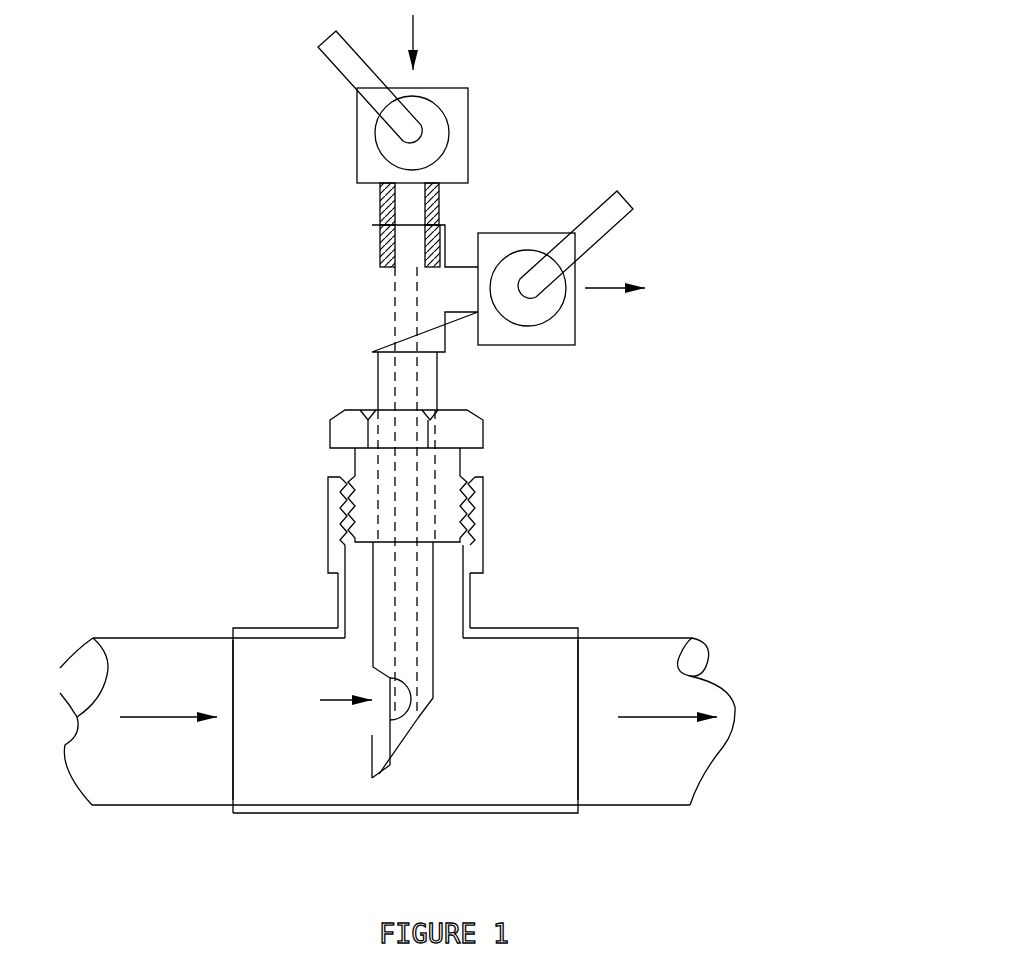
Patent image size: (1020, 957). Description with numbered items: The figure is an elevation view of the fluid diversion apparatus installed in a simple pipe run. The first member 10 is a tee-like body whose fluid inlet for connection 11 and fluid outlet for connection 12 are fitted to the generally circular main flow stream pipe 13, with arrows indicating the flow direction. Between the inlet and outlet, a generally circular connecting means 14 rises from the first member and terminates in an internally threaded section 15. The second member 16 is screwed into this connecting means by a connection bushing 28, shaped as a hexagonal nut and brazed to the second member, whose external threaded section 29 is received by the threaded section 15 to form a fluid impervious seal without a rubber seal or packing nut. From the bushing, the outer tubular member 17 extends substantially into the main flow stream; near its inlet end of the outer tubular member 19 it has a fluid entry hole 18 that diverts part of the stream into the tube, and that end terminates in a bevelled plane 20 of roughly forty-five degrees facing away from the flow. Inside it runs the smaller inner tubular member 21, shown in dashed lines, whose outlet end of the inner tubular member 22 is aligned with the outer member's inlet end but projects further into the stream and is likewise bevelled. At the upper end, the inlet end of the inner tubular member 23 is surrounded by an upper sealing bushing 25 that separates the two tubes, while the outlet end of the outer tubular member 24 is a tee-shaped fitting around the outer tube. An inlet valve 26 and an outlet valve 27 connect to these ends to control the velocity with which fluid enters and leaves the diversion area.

The first member 10 is at (398, 823).
The fluid inlet for connection 11 is at (233, 757).
The fluid outlet for connection 12 is at (577, 747).
The main flow stream pipe 13 is at (722, 757).
The connecting means 14 is at (337, 593).
The threaded section 15 is at (487, 514).
The second member 16 is at (605, 95).
The outer tubular member 17 is at (437, 628).
The fluid entry hole 18 is at (370, 733).
The inlet end of the outer tubular member 19 is at (413, 748).
The bevelled plane 20 is at (372, 778).
The inner tubular member 21 is at (418, 597).
The outlet end of the inner tubular member 22 is at (418, 718).
The inlet end of the inner tubular member 23 is at (403, 203).
The outlet end of the outer tubular member 24 is at (443, 278).
The upper sealing bushing 25 is at (380, 242).
The inlet valve 26 is at (452, 88).
The outlet valve 27 is at (577, 323).
The connection bushing 28 is at (347, 408).
The external threaded section 29 is at (347, 462).